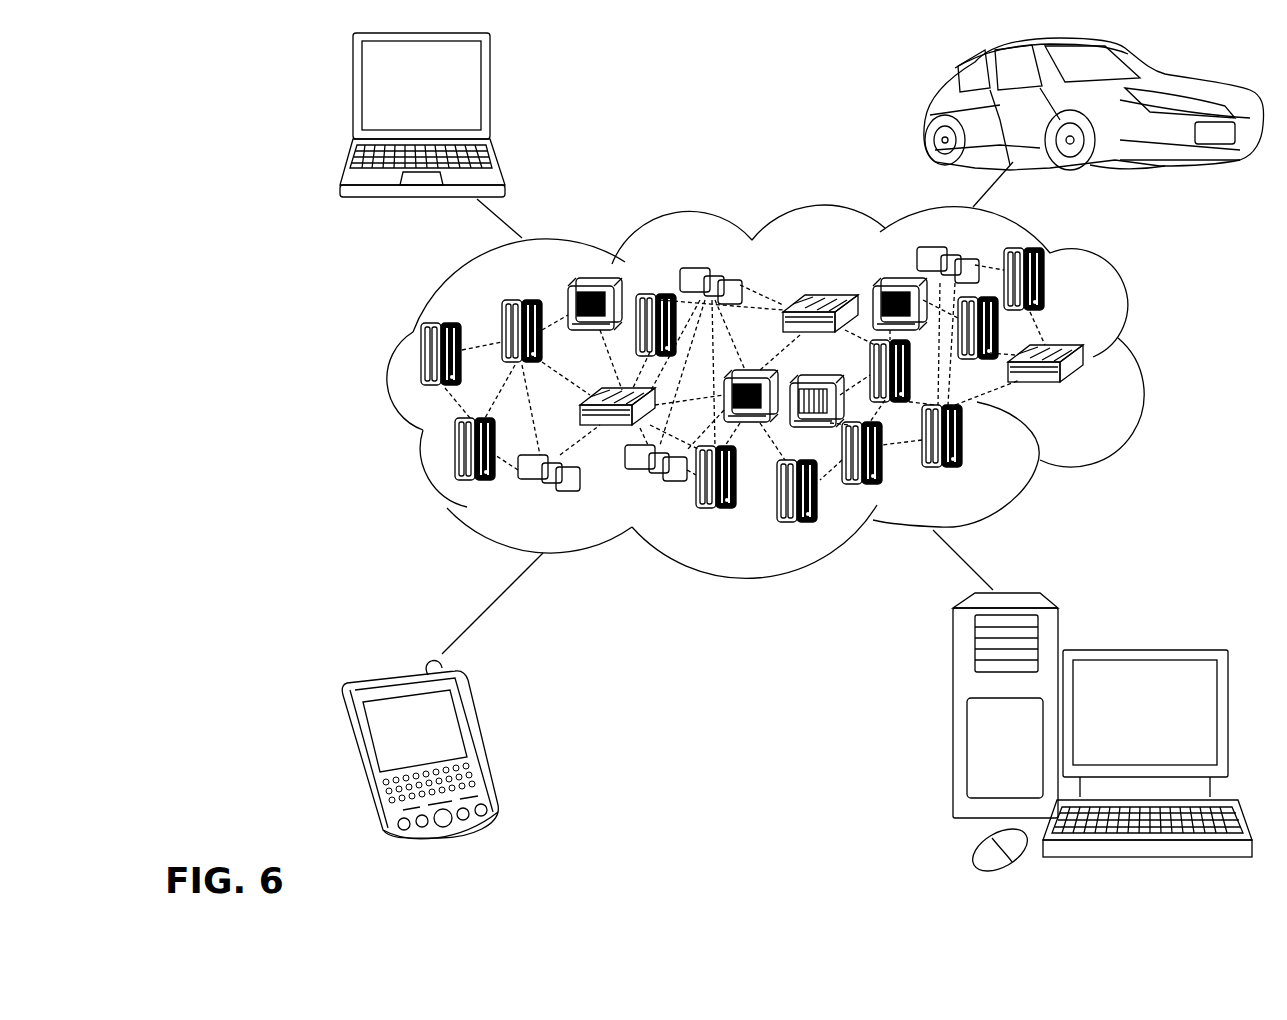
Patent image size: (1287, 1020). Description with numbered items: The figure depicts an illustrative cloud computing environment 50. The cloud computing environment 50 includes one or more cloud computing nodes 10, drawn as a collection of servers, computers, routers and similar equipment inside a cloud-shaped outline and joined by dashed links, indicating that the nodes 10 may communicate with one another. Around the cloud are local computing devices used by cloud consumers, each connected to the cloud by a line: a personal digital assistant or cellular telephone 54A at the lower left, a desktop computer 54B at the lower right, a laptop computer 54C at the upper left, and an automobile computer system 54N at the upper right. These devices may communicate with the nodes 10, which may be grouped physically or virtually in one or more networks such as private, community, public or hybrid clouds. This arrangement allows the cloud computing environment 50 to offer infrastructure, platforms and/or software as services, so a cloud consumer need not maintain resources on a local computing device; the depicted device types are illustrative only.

The cloud computing node 10 is at (1092, 394).
The cloud computing environment 50 is at (1143, 364).
The personal digital assistant or cellular telephone 54A is at (482, 737).
The desktop computer 54B is at (1142, 648).
The laptop computer 54C is at (492, 95).
The automobile computer system 54N is at (925, 110).